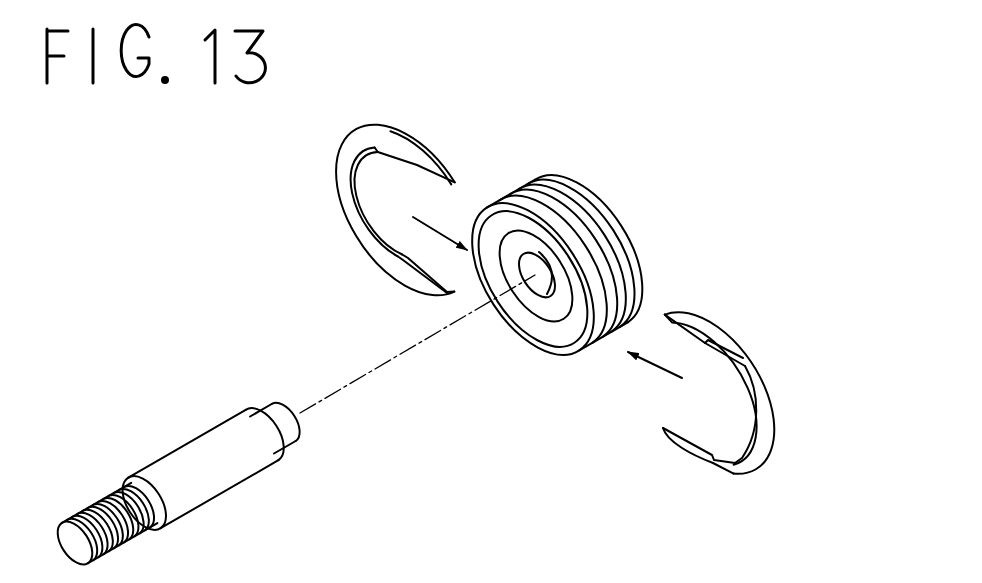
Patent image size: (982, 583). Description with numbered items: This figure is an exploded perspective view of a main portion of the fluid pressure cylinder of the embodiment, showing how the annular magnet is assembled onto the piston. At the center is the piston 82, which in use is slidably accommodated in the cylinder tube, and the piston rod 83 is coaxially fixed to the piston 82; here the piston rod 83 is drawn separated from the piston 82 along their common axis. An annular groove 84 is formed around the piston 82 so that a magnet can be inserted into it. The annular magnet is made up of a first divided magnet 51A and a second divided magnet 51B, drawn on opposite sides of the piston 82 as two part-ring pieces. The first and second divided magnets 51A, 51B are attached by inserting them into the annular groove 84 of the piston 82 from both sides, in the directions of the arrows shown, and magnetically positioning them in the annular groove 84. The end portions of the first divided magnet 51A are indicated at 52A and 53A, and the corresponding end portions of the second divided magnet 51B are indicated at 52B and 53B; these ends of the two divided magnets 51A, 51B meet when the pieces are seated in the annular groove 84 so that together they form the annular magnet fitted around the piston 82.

The piston 82 is at (628, 252).
The annular groove 84 is at (577, 221).
The piston rod 83 is at (187, 460).
The first divided magnet 51A is at (333, 178).
The end portion of first half bushing 52A is at (440, 150).
The end portion of first half bushing 53A is at (402, 292).
The second divided magnet 51B is at (788, 428).
The end portion of second half bushing 52B is at (703, 305).
The end portion of second half bushing 53B is at (668, 450).